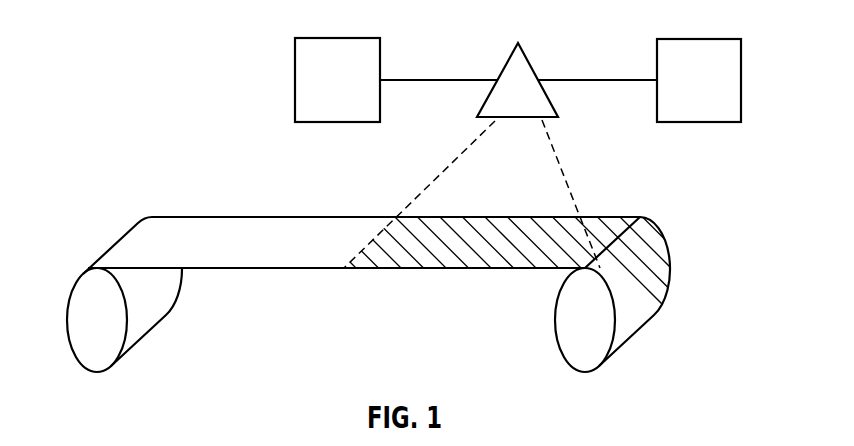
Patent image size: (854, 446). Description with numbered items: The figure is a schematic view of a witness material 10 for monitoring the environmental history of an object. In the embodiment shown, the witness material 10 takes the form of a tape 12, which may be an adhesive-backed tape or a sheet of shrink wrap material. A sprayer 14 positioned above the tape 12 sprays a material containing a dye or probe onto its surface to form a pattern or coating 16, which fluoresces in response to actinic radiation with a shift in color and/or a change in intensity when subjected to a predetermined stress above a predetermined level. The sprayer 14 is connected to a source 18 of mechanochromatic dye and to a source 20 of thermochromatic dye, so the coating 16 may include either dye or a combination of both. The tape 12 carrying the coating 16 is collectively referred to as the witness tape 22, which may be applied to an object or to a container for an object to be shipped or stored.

The witness material 10 is at (457, 267).
The tape 12 is at (262, 230).
The sprayer 14 is at (525, 75).
The coating 16 is at (460, 235).
The source of mechanochromatic dye 18 is at (727, 71).
The source of thermochromatic dye 20 is at (307, 67).
The witness tape 22 is at (660, 280).